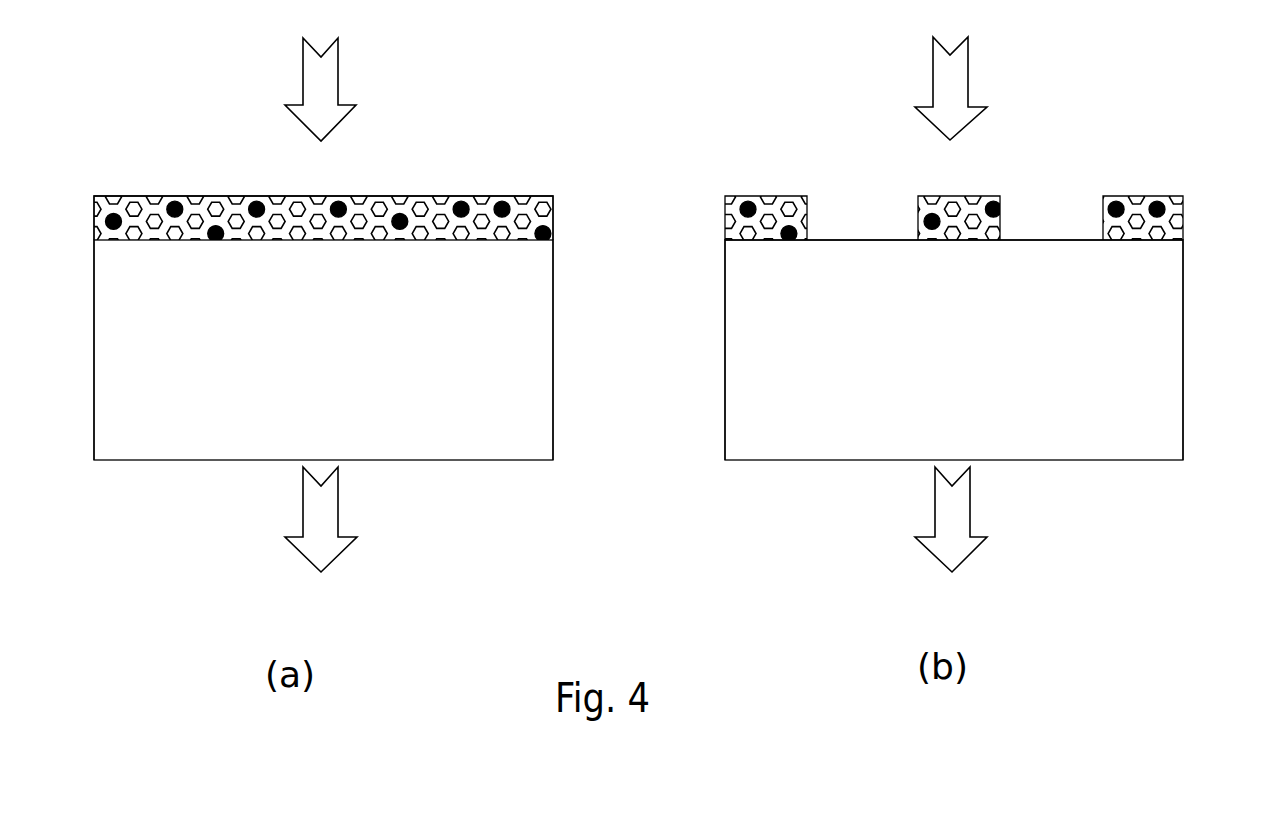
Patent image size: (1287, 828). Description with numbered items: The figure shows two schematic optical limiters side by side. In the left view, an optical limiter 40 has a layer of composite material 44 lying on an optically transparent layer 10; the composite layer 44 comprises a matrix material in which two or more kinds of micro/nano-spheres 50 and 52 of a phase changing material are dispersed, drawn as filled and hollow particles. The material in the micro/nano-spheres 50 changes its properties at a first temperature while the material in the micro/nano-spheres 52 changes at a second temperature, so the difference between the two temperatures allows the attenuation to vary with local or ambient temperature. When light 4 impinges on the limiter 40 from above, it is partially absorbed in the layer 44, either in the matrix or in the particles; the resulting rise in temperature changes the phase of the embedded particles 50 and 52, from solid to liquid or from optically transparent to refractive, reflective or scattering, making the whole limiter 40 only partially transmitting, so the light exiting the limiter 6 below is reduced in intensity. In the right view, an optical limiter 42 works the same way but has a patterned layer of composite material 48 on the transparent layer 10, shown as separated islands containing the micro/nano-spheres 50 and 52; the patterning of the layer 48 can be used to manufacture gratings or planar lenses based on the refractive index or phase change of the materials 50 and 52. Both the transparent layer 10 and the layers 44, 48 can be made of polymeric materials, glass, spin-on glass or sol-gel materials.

The light 4 is at (636, 89).
The light exiting the limiter 6 is at (636, 519).
The optically transparent layer 10 is at (170, 443).
The optical limiter 40 is at (567, 147).
The optical limiter 42 is at (1197, 147).
The layer of composite material 44 is at (147, 203).
The patterned layer of composite material 48 is at (1105, 204).
The micro/nano-spheres 50 is at (340, 202).
The micro/nano-spheres 52 is at (422, 207).